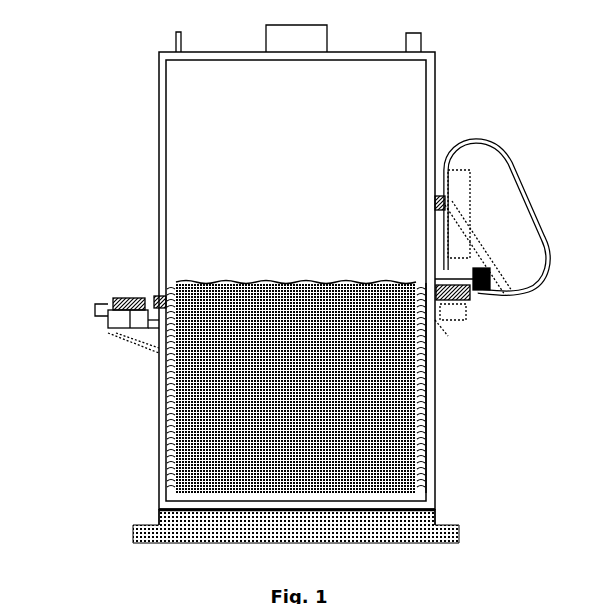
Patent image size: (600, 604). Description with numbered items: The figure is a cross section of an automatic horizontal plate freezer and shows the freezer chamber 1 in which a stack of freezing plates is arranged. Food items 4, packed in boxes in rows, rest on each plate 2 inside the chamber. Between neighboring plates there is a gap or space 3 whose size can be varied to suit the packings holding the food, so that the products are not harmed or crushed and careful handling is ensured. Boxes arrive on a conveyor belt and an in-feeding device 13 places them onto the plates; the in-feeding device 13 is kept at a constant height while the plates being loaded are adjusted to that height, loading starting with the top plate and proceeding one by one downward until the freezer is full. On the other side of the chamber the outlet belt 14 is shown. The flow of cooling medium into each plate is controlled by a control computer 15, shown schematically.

The freezer chamber 1 is at (428, 101).
The plate 2 is at (413, 447).
The gap/space 3 is at (411, 367).
The food items 4 is at (399, 472).
The in-feeding device 13 is at (468, 291).
The outlet belt 14 is at (99, 326).
The control computer 15 is at (469, 190).